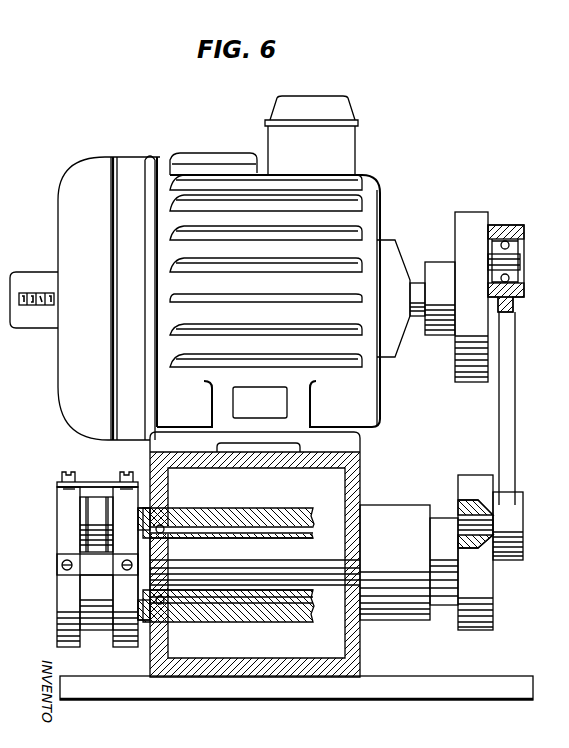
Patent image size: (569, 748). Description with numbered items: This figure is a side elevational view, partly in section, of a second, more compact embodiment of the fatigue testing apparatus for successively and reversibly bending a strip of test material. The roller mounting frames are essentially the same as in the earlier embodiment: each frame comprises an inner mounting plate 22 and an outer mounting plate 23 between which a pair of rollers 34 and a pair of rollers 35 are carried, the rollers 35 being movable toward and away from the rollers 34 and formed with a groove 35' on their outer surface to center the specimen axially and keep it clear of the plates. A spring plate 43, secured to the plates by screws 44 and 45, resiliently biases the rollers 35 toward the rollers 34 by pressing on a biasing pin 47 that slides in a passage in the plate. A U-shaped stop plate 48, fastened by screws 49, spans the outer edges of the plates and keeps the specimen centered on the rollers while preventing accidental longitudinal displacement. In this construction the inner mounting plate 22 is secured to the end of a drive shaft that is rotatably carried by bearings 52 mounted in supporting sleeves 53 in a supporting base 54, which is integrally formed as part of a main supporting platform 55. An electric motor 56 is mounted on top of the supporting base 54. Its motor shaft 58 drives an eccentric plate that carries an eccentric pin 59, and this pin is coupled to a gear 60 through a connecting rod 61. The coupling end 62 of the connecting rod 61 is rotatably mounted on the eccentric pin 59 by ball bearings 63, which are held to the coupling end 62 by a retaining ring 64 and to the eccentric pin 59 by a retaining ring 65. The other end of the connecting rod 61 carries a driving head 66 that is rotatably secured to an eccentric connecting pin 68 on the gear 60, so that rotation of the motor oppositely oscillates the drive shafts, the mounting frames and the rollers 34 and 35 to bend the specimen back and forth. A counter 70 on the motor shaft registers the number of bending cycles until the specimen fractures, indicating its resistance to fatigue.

The mounting plate 22 is at (128, 632).
The mounting plate 23 is at (68, 532).
The rollers 34 is at (93, 620).
The rollers 35 is at (67, 522).
The groove 35' is at (65, 524).
The spring plate 43 is at (96, 482).
The screws 44 is at (128, 480).
The screws 45 is at (74, 480).
The biasing pin 47 is at (57, 485).
The U-shaped plate 48 is at (57, 572).
The screws 49 is at (63, 565).
The bearings 52 is at (180, 622).
The supporting sleeves 53 is at (258, 610).
The supporting base 54 is at (353, 636).
The main supporting platform 55 is at (428, 686).
The electric motor 56 is at (73, 203).
The motor shaft 58 is at (418, 283).
The eccentric pin 59 is at (522, 250).
The gear 60 is at (480, 617).
The connecting rod 61 is at (507, 376).
The coupling end 62 is at (498, 228).
The ball bearings 63 is at (514, 228).
The retaining ring 64 is at (523, 283).
The retaining ring 65 is at (522, 266).
The driving head 66 is at (513, 517).
The eccentric connecting pin 68 is at (495, 532).
The counter 70 is at (37, 292).